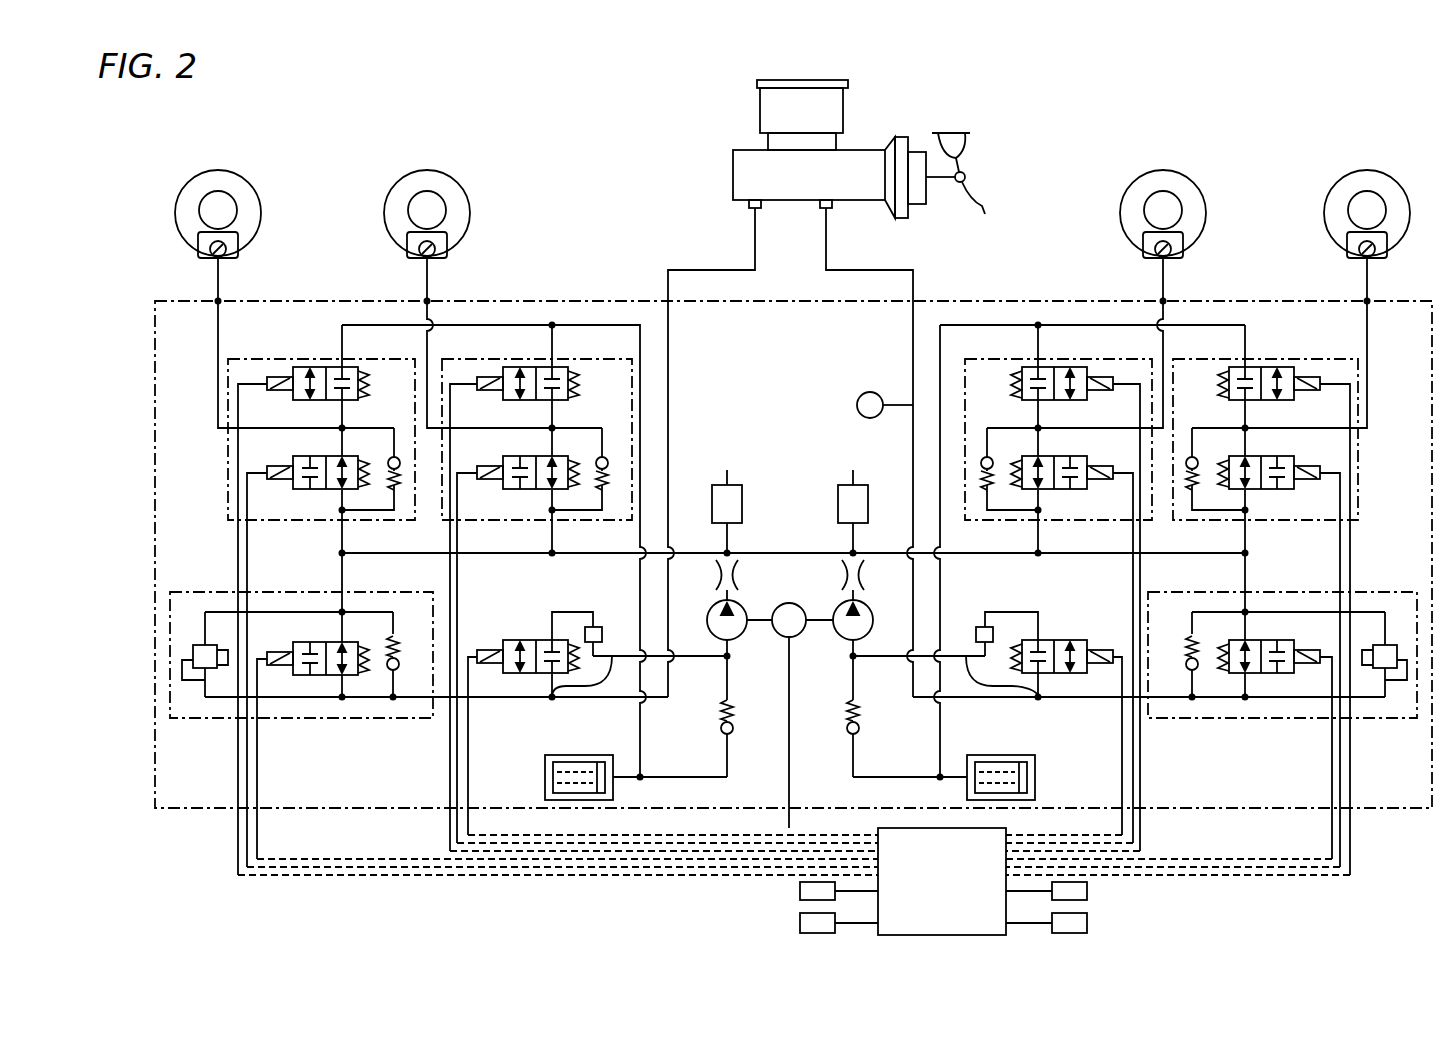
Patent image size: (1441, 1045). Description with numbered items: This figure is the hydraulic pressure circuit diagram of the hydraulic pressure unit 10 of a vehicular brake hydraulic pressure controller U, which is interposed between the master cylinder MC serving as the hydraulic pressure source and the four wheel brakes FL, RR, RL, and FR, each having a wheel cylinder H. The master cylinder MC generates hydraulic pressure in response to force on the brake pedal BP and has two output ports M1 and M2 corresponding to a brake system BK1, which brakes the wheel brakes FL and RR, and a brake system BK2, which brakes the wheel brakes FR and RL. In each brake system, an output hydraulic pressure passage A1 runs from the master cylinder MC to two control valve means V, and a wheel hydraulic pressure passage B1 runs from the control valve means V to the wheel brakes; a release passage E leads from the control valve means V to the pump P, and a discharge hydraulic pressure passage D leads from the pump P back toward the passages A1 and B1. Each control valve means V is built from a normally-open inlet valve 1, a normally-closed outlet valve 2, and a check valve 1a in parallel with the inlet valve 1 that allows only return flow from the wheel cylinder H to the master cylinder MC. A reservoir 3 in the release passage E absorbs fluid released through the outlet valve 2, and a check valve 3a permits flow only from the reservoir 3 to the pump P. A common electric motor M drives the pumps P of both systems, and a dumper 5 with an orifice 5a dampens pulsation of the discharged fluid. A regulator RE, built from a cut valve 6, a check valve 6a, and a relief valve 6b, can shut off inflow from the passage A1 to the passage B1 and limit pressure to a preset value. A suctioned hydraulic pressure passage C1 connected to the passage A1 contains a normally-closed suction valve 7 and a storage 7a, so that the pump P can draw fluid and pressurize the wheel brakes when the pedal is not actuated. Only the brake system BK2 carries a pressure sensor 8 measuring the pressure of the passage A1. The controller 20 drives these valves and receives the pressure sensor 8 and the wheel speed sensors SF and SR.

The inlet valve 1 is at (302, 492).
The check valve 1a is at (394, 457).
The outlet valve 2 is at (345, 368).
The reservoir 3 is at (540, 790).
The check valve 3a is at (736, 722).
The dumper 5 is at (727, 480).
The orifice 5a is at (736, 568).
The cut valve 6 is at (306, 676).
The check valve 6a is at (398, 662).
The relief valve 6b is at (204, 645).
The suction valve 7 is at (503, 632).
The storage 7a is at (603, 628).
The pressure sensor 8 is at (857, 406).
The hydraulic pressure unit 10 is at (1068, 301).
The controller 20 is at (942, 881).
The wheel brake FL is at (214, 168).
The wheel brake RR is at (424, 168).
The wheel brake RL is at (1182, 168).
The wheel brake FR is at (1383, 168).
The wheel cylinder H is at (226, 246).
The master cylinder MC is at (733, 177).
The brake pedal BP is at (984, 214).
The vehicular brake hydraulic pressure controller U is at (1004, 130).
The output port M1 is at (751, 210).
The output port M2 is at (829, 210).
The brake system BK1 is at (522, 290).
The brake system BK2 is at (1265, 290).
The release passage E is at (578, 325).
The control valve means V is at (228, 445).
The output hydraulic pressure passage A1 is at (670, 368).
The wheel hydraulic pressure passage B1 is at (218, 334).
The discharge hydraulic pressure passage D is at (690, 553).
The electric motor M is at (789, 603).
The pump P is at (738, 636).
The suctioned hydraulic pressure passage C1 is at (553, 698).
The regulator RE is at (392, 720).
The wheel speed sensor SF is at (800, 891).
The wheel speed sensor SR is at (800, 923).